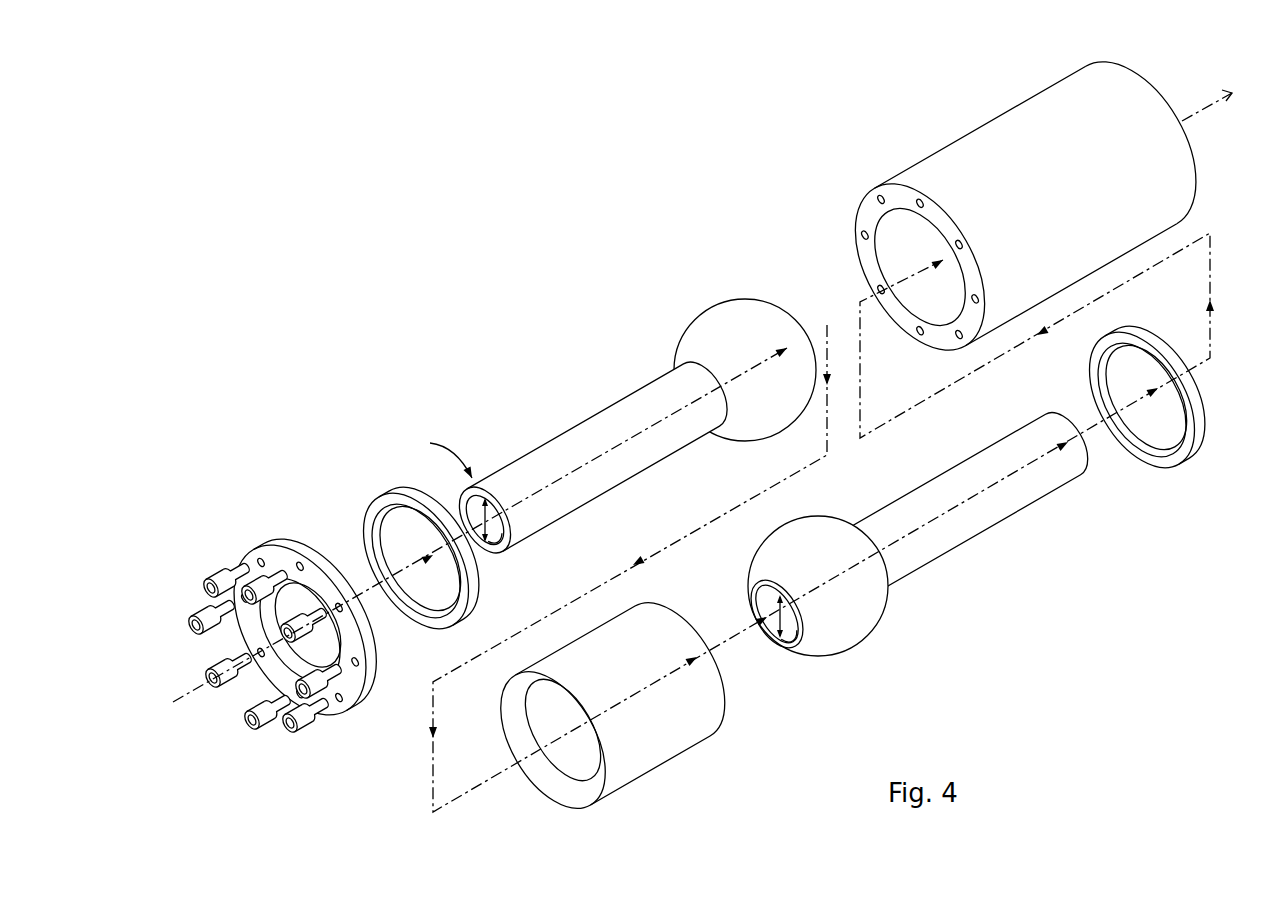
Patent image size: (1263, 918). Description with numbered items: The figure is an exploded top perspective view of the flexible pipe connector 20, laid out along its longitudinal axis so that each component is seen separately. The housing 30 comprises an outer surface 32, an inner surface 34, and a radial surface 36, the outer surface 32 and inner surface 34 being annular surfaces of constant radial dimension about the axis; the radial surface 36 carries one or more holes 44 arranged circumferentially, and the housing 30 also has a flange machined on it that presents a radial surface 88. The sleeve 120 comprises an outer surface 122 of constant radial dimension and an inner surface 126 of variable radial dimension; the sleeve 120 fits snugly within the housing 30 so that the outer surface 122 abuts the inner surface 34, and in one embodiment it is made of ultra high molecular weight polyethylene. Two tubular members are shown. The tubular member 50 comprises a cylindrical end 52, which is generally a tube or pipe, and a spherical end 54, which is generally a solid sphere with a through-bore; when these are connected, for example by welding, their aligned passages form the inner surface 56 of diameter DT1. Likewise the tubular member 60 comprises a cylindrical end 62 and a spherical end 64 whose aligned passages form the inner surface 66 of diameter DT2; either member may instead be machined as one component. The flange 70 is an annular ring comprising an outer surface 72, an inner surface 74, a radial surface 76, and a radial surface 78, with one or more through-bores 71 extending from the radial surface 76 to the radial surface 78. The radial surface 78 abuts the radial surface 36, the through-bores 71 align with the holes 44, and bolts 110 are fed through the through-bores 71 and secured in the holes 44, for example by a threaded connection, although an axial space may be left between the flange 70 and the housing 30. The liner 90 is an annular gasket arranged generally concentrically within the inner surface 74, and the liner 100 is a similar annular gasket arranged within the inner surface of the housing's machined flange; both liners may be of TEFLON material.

The flexible pipe connector 20 is at (432, 182).
The housing 30 is at (917, 125).
The outer surface 32 is at (980, 148).
The inner surface 34 is at (930, 308).
The radial surface 36 is at (867, 215).
The holes 44 is at (880, 197).
The radial surface 88 is at (1197, 202).
The tubular member 50 is at (575, 350).
The cylindrical end 52 is at (533, 463).
The spherical end 54 is at (707, 328).
The inner surface 56 is at (463, 507).
The diameter DT1 is at (512, 540).
The tubular member 60 is at (1038, 515).
The cylindrical end 62 is at (937, 557).
The spherical end 64 is at (863, 617).
The inner surface 66 is at (760, 595).
The diameter DT2 is at (790, 640).
The flange 70 is at (308, 535).
The through-bores 71 is at (343, 703).
The outer surface 72 is at (367, 690).
The inner surface 74 is at (262, 613).
The radial surface 76 is at (270, 673).
The radial surface 78 is at (313, 535).
The liner 90 is at (373, 490).
The liner 100 is at (1183, 470).
The bolts 110 is at (212, 575).
The sleeve 120 is at (677, 733).
The outer surface 122 is at (580, 664).
The inner surface 126 is at (518, 733).